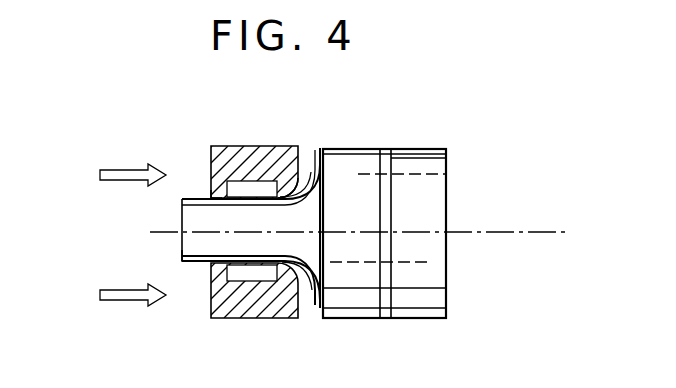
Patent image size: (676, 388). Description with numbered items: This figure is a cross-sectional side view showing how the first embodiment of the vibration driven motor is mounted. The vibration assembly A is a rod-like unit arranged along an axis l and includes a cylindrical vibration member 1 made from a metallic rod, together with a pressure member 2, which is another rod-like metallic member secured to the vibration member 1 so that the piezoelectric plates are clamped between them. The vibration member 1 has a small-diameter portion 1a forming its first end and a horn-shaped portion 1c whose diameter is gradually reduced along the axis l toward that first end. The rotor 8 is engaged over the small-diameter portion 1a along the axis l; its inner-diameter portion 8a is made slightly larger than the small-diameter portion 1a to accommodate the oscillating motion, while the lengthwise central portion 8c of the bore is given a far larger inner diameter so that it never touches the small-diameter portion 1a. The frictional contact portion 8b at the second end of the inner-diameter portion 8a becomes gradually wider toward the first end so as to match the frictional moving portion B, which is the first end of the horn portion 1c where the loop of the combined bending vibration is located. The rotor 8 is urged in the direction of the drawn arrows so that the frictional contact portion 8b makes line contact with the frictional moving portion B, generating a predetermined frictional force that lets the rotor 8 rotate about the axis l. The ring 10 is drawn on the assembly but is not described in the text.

The vibration member 1 is at (265, 221).
The small-diameter portion 1a is at (202, 254).
The horn-shaped portion 1c is at (322, 240).
The pressure member 2 is at (438, 168).
The rotor 8 is at (244, 209).
The inner-diameter portion 8a is at (208, 199).
The frictional contact portion 8b is at (306, 180).
The lengthwise central portion 8c is at (248, 188).
The ring 10 is at (412, 147).
The vibration assembly A is at (404, 194).
The frictional moving portion B is at (307, 276).
The axis l is at (369, 238).